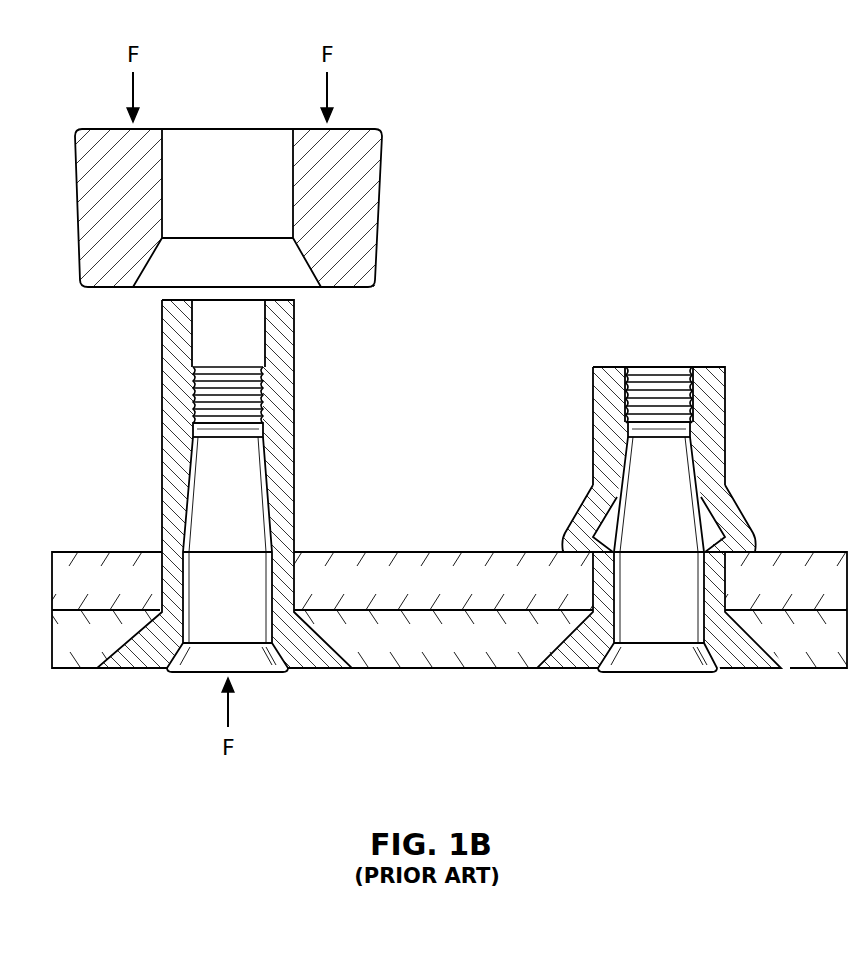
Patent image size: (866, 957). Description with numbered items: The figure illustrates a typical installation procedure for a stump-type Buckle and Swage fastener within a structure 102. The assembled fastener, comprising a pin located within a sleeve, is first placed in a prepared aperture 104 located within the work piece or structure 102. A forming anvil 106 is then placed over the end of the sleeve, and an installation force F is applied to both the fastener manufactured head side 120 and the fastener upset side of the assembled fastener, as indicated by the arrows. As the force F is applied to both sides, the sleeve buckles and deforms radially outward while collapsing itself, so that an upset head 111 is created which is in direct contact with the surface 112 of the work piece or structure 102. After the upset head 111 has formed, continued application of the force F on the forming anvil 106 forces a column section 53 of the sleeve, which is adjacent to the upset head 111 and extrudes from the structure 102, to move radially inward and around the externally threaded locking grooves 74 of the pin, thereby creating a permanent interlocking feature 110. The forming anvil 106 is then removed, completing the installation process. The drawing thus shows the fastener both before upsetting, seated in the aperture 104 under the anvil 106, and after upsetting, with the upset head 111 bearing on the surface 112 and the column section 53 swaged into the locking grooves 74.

The forming anvil 106 is at (88, 153).
The prepared aperture 104 is at (295, 577).
The structure 102 is at (420, 558).
The fastener manufactured head side 120 is at (180, 675).
The externally threaded locking grooves 74 is at (633, 405).
The column section 53 is at (600, 447).
The upset head 111 is at (573, 530).
The permanent interlocking feature 110 is at (695, 400).
The surface 112 is at (777, 550).